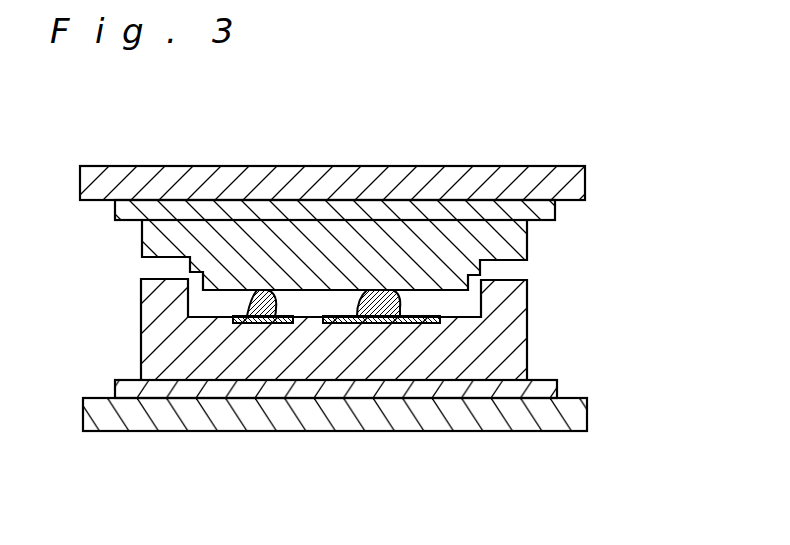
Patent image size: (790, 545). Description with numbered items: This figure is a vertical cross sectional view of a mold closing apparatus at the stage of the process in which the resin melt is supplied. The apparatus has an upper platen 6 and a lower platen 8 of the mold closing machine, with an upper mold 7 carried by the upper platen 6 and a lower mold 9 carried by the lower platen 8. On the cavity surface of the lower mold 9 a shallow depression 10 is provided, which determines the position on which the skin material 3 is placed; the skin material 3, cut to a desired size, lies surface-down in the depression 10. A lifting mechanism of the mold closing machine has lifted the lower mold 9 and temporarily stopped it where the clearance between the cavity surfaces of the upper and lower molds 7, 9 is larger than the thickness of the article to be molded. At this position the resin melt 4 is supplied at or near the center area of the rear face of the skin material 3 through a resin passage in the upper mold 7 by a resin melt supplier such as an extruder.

The skin material 3 is at (265, 323).
The resin melt 4 is at (262, 291).
The upper platen 6 is at (586, 182).
The upper mold 7 is at (527, 238).
The lower platen 8 is at (578, 415).
The lower mold 9 is at (520, 345).
The shallow depression 10 is at (240, 323).